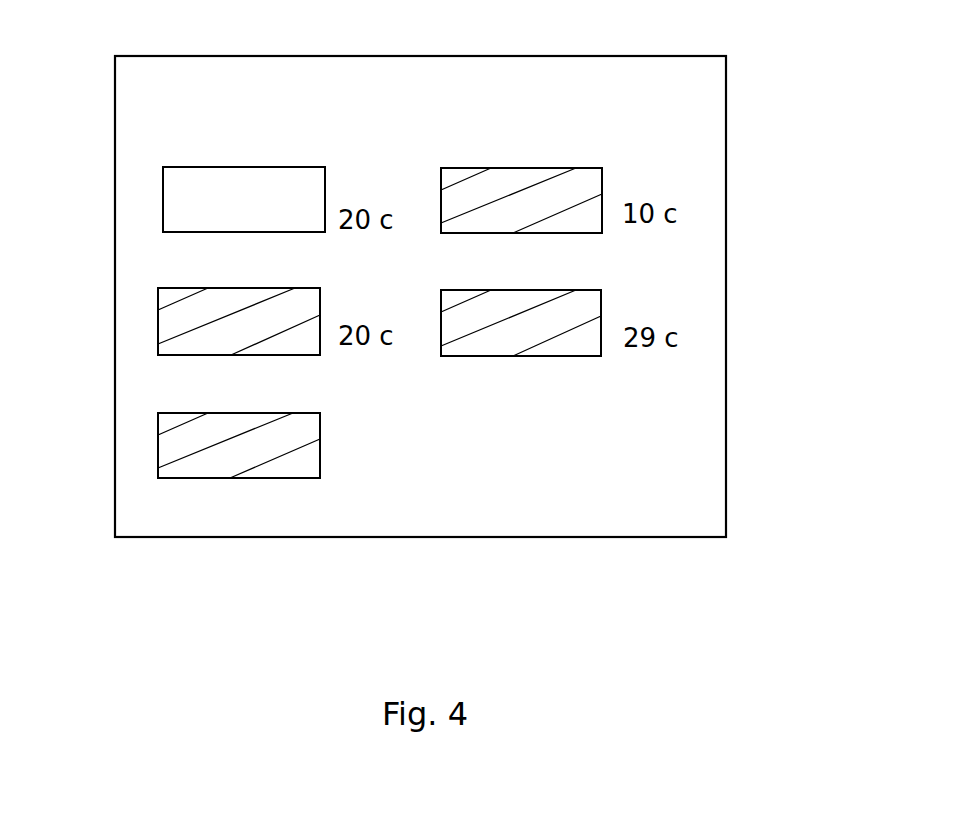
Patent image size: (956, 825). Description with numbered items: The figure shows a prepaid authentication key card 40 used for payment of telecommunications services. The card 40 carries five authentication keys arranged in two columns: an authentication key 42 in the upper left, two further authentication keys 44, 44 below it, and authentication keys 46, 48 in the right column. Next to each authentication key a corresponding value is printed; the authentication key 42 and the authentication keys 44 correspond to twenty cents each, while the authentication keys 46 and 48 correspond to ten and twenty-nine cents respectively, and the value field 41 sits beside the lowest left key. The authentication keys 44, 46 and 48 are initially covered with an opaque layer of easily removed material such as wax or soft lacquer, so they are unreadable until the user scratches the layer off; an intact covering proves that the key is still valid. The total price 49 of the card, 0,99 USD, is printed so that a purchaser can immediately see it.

The prepaid authentication key card 40 is at (726, 56).
The price field of display 41 is at (390, 473).
The authentication key 42 is at (163, 200).
The authentication key 44 is at (158, 318).
The authentication key 46 is at (602, 170).
The authentication key 48 is at (601, 303).
The total price 49 is at (603, 458).